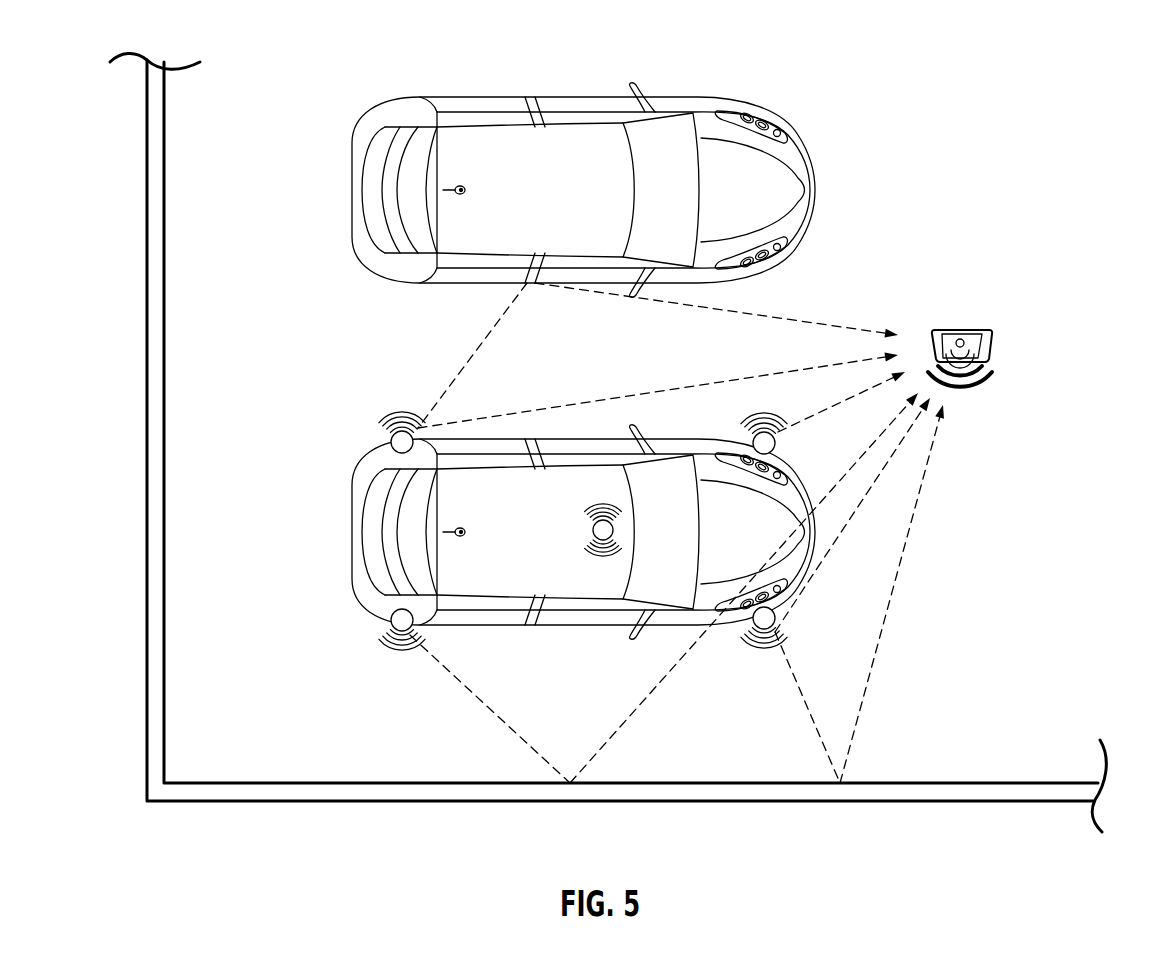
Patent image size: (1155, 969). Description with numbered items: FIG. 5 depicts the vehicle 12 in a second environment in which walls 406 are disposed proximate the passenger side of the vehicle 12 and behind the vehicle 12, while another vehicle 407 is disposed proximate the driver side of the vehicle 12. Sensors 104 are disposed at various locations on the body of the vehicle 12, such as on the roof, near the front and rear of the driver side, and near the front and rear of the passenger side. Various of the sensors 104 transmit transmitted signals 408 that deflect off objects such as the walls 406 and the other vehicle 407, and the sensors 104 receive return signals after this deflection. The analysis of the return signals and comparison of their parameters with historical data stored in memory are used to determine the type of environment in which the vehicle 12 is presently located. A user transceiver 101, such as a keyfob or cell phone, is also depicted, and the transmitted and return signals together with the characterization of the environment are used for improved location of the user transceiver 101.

The vehicle 12 is at (822, 522).
The user transceiver 101 is at (993, 345).
The sensors 104 is at (391, 440).
The walls 406 is at (155, 422).
The other vehicle 407 is at (718, 97).
The transmitted signals 408 is at (388, 412).